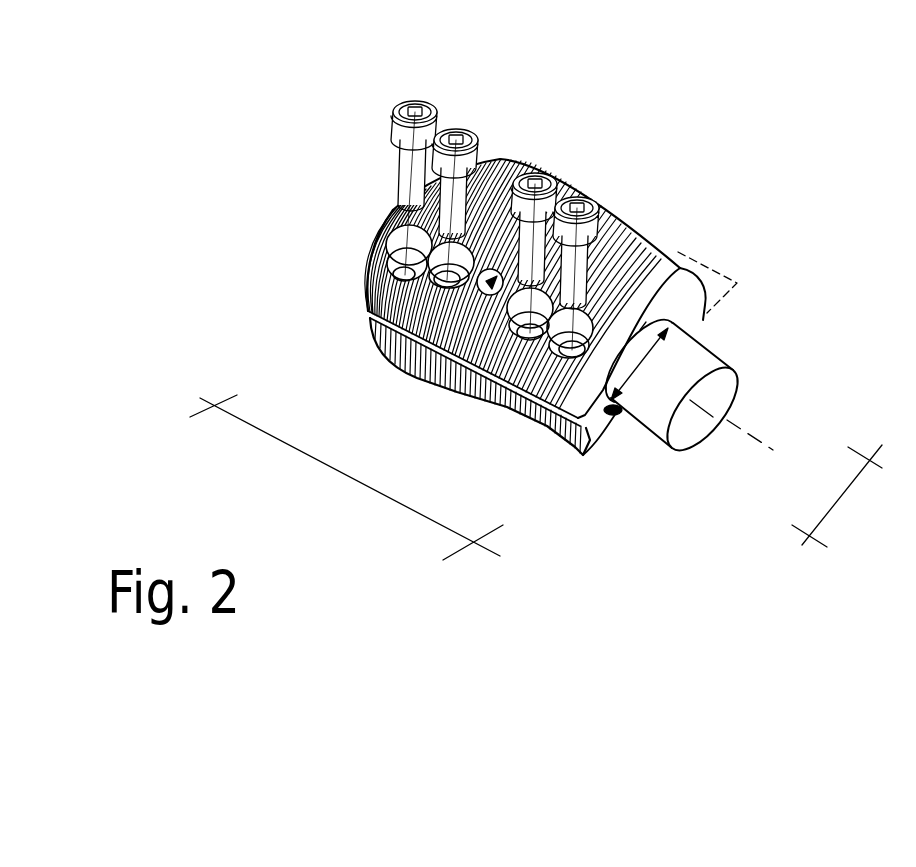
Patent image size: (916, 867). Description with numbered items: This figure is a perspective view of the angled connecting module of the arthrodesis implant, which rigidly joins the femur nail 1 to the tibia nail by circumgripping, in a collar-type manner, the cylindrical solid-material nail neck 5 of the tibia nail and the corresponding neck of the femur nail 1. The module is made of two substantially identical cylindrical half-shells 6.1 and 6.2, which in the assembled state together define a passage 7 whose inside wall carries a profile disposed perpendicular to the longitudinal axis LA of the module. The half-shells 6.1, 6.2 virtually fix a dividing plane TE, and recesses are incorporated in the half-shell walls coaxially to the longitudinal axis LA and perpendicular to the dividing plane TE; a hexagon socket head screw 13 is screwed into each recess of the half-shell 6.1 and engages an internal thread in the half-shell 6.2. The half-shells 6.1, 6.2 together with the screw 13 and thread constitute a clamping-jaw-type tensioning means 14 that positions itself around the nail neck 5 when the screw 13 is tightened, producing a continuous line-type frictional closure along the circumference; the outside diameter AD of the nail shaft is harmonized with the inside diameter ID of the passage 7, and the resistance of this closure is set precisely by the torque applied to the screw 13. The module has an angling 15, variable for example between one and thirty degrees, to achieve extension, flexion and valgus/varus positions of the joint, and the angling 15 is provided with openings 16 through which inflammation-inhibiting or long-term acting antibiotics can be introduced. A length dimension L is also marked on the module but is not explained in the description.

The femur nail 1 is at (392, 214).
The nail neck 5 is at (656, 412).
The half-shell 6.1 is at (684, 290).
The half-shell 6.2 is at (695, 331).
The passage 7 is at (647, 320).
The hexagon socket head screw 13 is at (585, 199).
The tensioning means 14 is at (578, 275).
The angling 15 is at (476, 342).
The openings 16 is at (417, 362).
The dividing plane TE is at (722, 285).
The inside diameter ID is at (656, 371).
The outside diameter AD is at (851, 510).
The length L is at (346, 477).
The longitudinal axis LA is at (772, 471).